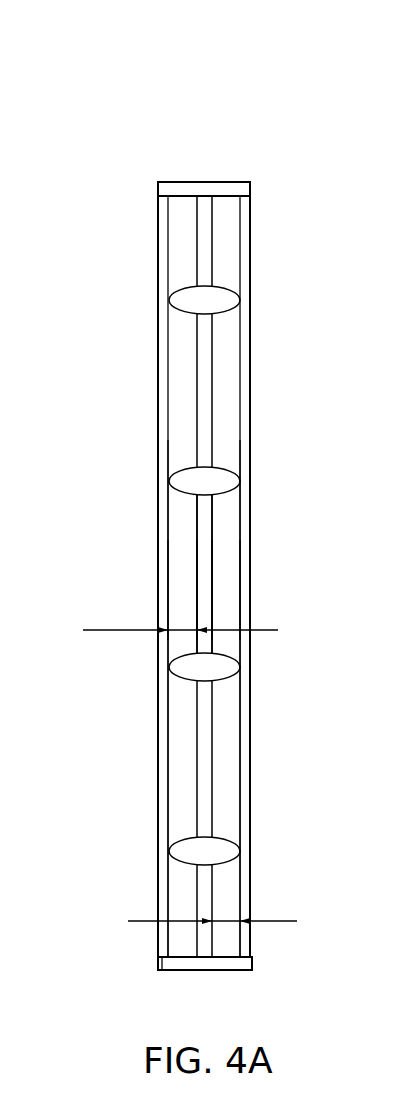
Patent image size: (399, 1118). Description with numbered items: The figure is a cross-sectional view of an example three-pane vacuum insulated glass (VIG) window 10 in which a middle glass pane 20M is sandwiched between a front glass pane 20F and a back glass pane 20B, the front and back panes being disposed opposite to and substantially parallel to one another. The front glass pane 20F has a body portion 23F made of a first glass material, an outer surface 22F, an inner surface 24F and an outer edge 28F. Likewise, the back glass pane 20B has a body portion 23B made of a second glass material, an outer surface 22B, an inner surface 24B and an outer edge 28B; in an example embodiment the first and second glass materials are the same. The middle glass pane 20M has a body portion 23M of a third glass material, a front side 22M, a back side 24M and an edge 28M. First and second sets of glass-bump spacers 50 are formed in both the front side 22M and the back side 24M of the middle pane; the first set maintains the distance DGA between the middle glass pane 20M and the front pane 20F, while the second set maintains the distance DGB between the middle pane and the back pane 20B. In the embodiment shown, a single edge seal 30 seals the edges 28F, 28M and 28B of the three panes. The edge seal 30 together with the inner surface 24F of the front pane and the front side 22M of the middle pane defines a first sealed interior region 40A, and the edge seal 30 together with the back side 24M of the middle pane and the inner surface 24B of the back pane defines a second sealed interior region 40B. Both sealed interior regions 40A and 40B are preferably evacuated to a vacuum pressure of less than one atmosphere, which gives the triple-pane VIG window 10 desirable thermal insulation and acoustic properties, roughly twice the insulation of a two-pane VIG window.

The VIG window 10 is at (129, 84).
The edge seal 30 is at (212, 574).
The edge 28M is at (205, 195).
The outer edge 28F is at (162, 972).
The outer edge 28B is at (253, 968).
The front glass pane 20F is at (118, 574).
The outer surface 22F is at (158, 277).
The inner surface 24F is at (170, 228).
The body portion 23F is at (163, 472).
The back glass pane 20B is at (303, 576).
The outer surface 22B is at (252, 224).
The inner surface 24B is at (240, 228).
The body portion 23B is at (243, 470).
The middle glass pane 20M is at (213, 576).
The front side 22M is at (197, 540).
The back side 24M is at (213, 552).
The body portion 23M is at (205, 605).
The glass-bump spacers 50 is at (187, 483).
The first sealed interior region 40A is at (182, 587).
The second sealed interior region 40B is at (227, 572).
The distance DGA is at (120, 630).
The distance DGB is at (297, 921).